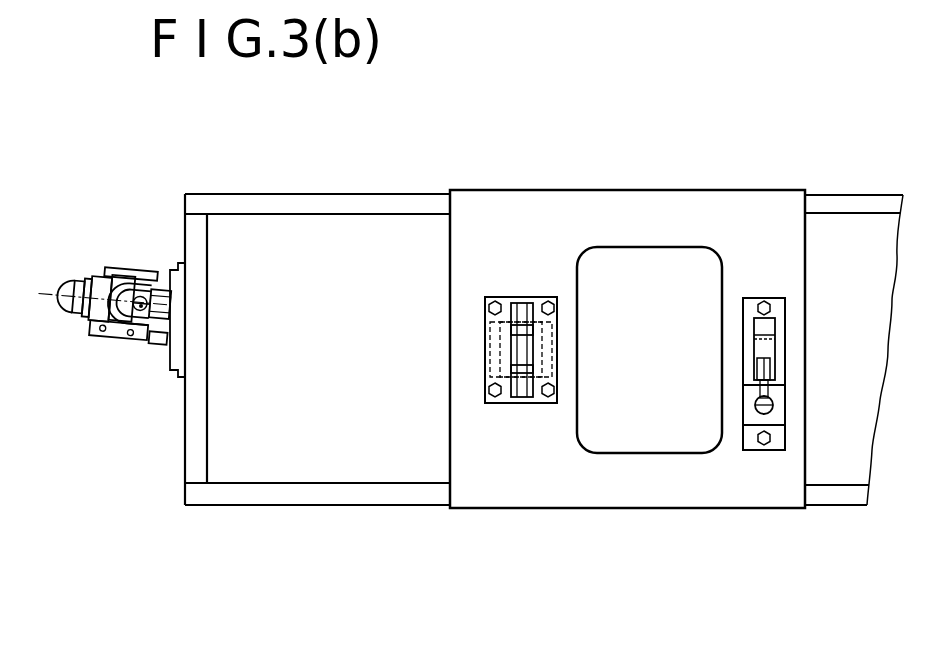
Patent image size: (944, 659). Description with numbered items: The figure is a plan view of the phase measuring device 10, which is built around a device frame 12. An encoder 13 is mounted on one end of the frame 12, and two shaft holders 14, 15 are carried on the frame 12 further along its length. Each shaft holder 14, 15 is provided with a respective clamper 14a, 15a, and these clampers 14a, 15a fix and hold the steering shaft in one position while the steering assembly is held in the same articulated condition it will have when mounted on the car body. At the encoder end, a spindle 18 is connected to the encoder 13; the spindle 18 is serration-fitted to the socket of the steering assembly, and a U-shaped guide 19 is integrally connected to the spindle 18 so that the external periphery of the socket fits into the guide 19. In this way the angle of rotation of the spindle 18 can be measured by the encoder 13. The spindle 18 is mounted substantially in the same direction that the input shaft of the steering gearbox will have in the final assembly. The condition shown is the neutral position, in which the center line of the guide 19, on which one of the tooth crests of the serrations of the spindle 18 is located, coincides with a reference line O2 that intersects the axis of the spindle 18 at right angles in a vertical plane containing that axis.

The phase measuring device 10 is at (289, 187).
The device frame 12 is at (373, 205).
The encoder 13 is at (66, 305).
The shaft holder 14 is at (511, 321).
The clamper 14a is at (511, 366).
The shaft holder 15 is at (754, 322).
The clamper 15a is at (757, 360).
The spindle 18 is at (160, 303).
The U-shaped guide 19 is at (122, 283).
The reference line O2 is at (147, 307).